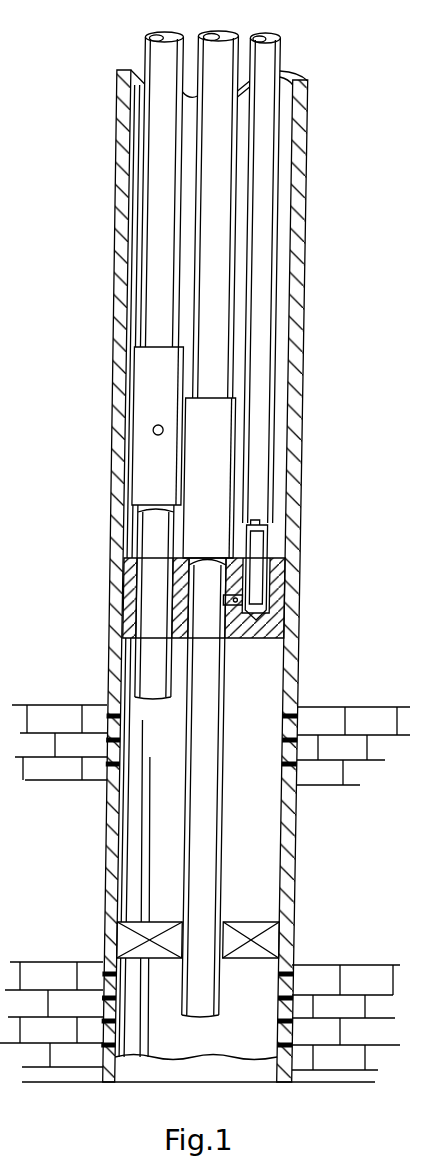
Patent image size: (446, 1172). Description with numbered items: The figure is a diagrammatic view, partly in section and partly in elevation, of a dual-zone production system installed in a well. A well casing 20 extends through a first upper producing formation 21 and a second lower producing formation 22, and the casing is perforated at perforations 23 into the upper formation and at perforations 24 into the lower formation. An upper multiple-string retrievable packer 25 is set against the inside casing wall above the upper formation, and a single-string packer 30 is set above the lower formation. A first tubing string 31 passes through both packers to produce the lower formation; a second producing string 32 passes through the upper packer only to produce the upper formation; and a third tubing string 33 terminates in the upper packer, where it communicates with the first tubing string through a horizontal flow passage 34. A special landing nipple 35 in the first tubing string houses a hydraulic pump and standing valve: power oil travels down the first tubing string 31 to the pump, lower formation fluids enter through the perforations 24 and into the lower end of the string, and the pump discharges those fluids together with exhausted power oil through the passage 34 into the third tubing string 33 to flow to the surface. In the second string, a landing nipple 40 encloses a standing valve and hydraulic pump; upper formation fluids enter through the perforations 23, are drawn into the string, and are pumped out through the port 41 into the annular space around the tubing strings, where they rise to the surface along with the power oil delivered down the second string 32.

The well casing 20 is at (309, 312).
The upper producing formation 21 is at (416, 759).
The lower producing formation 22 is at (413, 1022).
The casing perforations into upper formation 23 is at (295, 766).
The casing perforations into lower formation 24 is at (298, 985).
The upper multiple-string retrievable packer 25 is at (272, 640).
The single-string packer 30 is at (277, 900).
The first tubing string 31 is at (207, 32).
The second producing string 32 is at (150, 41).
The third tubing string 33 is at (279, 39).
The horizontal flow passage 34 is at (241, 638).
The special landing nipple 35 is at (228, 512).
The landing nipple 40 is at (149, 396).
The port 41 is at (160, 430).